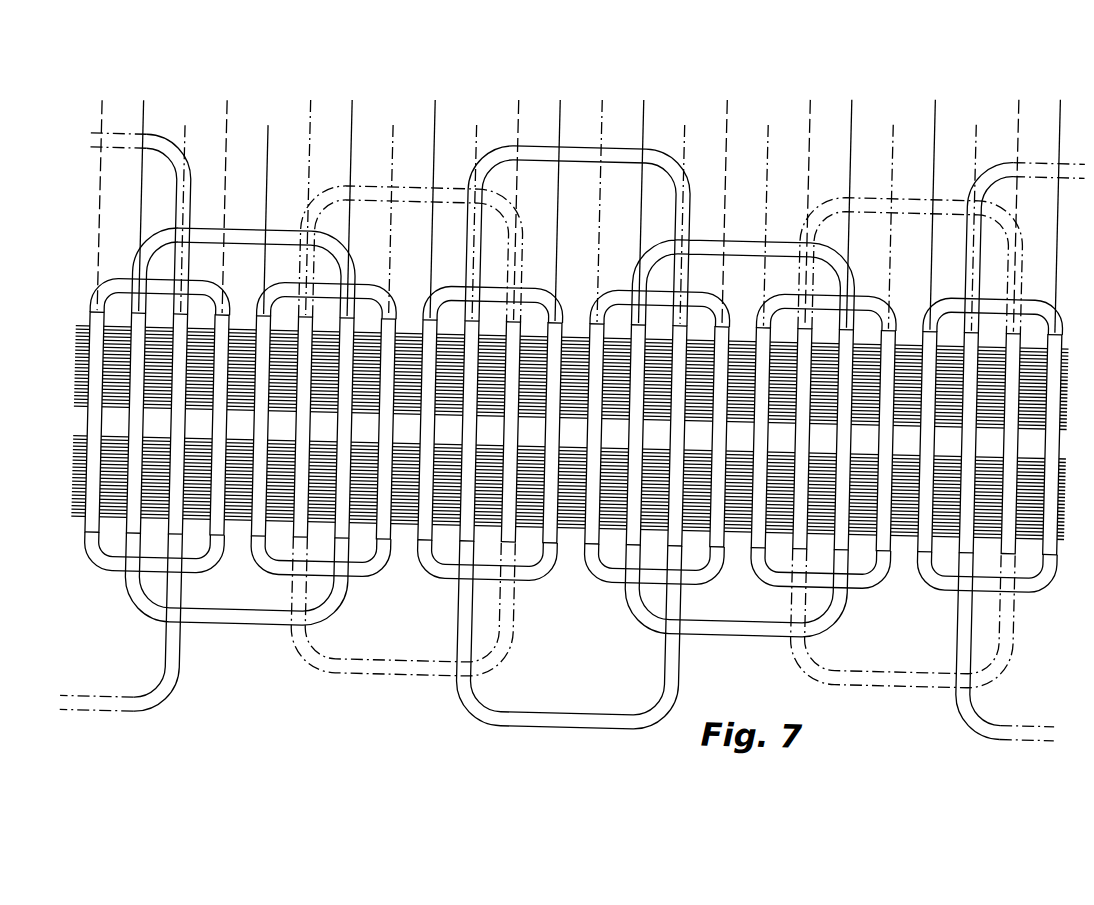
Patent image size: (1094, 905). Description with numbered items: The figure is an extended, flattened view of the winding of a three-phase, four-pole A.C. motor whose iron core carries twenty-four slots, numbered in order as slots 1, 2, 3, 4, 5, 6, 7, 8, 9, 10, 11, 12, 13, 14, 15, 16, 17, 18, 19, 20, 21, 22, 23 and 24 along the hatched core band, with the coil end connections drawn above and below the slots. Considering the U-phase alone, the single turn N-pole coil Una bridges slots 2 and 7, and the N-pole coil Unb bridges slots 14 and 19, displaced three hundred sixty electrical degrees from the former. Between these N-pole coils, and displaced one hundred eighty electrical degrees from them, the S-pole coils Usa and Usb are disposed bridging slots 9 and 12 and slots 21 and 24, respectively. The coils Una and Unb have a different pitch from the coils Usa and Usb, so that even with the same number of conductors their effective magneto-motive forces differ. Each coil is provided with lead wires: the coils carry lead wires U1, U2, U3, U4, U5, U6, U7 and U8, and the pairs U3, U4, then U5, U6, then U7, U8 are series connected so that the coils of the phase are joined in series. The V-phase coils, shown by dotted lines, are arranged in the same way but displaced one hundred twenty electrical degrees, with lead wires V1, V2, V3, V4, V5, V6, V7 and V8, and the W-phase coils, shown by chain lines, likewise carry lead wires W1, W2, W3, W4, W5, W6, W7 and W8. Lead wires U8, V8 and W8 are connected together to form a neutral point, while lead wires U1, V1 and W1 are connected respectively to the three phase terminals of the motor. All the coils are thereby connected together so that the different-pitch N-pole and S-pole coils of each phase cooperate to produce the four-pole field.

The slot 1 is at (94, 422).
The slot 2 is at (136, 423).
The slot 3 is at (178, 424).
The slot 4 is at (219, 425).
The slot 5 is at (261, 426).
The slot 6 is at (303, 427).
The slot 7 is at (344, 428).
The slot 8 is at (386, 429).
The slot 9 is at (427, 430).
The slot 10 is at (470, 431).
The slot 11 is at (511, 432).
The slot 12 is at (553, 433).
The slot 13 is at (595, 434).
The slot 14 is at (636, 435).
The slot 15 is at (677, 436).
The slot 16 is at (719, 437).
The slot 17 is at (761, 437).
The slot 18 is at (802, 438).
The slot 19 is at (844, 439).
The slot 20 is at (886, 440).
The slot 21 is at (927, 441).
The slot 22 is at (969, 442).
The slot 23 is at (1011, 443).
The slot 24 is at (1052, 444).
The lead wire U1 is at (143, 195).
The lead wire U2 is at (351, 197).
The lead wire U3 is at (558, 200).
The lead wire U4 is at (434, 198).
The lead wire U5 is at (642, 201).
The lead wire U6 is at (850, 203).
The lead wire U7 is at (1058, 205).
The lead wire U8 is at (933, 203).
The lead wire V1 is at (309, 197).
The lead wire V2 is at (517, 199).
The lead wire V3 is at (725, 202).
The lead wire V4 is at (600, 200).
The lead wire V5 is at (808, 203).
The lead wire V6 is at (1017, 204).
The lead wire V7 is at (225, 196).
The lead wire V8 is at (100, 194).
The lead wire W1 is at (477, 212).
The lead wire W2 is at (685, 214).
The lead wire W3 is at (894, 216).
The lead wire W4 is at (769, 215).
The lead wire W5 is at (977, 217).
The lead wire W6 is at (186, 208).
The lead wire W7 is at (394, 211).
The lead wire W8 is at (269, 209).
The N-pole coil Una is at (236, 579).
The N-pole coil Unb is at (736, 591).
The S-pole coil Usa is at (526, 568).
The S-pole coil Usb is at (934, 563).